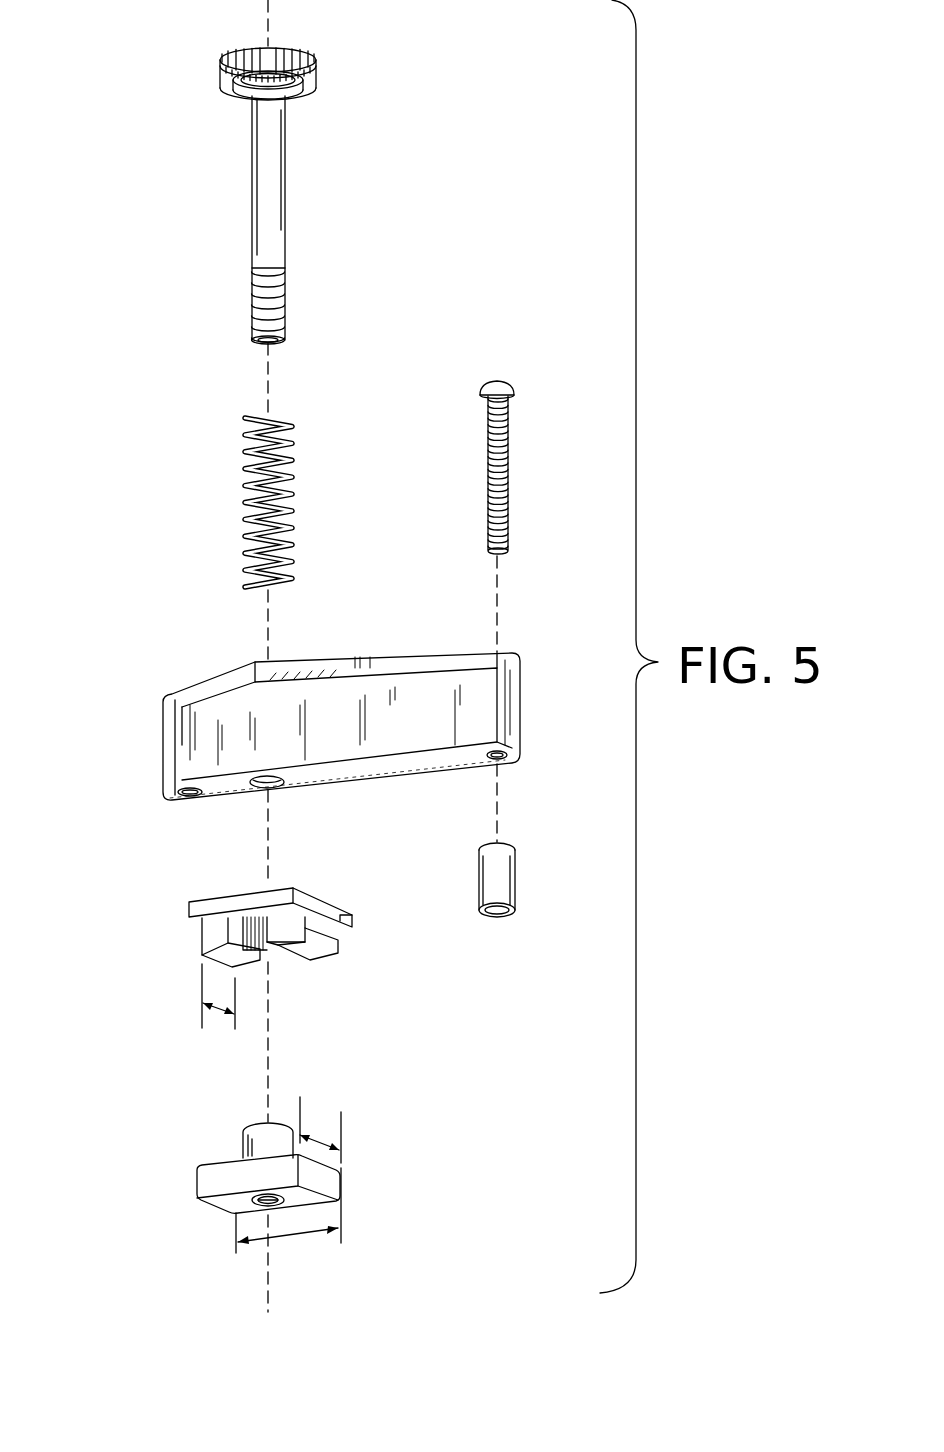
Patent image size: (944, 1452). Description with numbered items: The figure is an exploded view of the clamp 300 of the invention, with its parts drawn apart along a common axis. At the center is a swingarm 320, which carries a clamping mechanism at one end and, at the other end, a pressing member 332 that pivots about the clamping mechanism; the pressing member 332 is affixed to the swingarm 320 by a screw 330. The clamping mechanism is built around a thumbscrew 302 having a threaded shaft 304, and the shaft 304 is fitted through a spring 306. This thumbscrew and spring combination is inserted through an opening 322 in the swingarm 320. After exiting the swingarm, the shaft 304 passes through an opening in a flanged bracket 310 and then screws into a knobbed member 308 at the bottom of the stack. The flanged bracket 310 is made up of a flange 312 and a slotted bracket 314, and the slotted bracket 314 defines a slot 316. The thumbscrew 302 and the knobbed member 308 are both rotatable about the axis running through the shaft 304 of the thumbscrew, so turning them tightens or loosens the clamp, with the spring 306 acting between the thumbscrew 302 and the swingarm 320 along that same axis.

The clamp assembly 300 is at (155, 28).
The thumbscrew 302 is at (316, 72).
The threaded shaft 304 is at (275, 246).
The spring 306 is at (291, 452).
The knobbed member 308 is at (198, 1179).
The flanged bracket 310 is at (168, 955).
The flange 312 is at (343, 932).
The slotted bracket 314 is at (324, 960).
The slot 316 is at (283, 972).
The swingarm 320 is at (200, 684).
The opening 322 is at (262, 792).
The screw 330 is at (509, 459).
The pressing member 332 is at (503, 873).